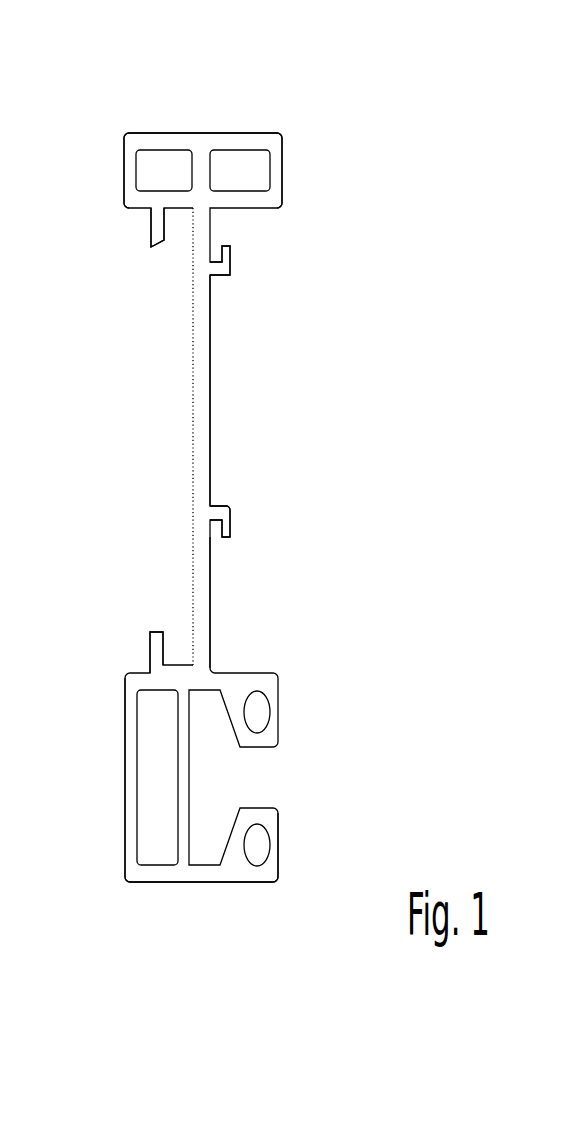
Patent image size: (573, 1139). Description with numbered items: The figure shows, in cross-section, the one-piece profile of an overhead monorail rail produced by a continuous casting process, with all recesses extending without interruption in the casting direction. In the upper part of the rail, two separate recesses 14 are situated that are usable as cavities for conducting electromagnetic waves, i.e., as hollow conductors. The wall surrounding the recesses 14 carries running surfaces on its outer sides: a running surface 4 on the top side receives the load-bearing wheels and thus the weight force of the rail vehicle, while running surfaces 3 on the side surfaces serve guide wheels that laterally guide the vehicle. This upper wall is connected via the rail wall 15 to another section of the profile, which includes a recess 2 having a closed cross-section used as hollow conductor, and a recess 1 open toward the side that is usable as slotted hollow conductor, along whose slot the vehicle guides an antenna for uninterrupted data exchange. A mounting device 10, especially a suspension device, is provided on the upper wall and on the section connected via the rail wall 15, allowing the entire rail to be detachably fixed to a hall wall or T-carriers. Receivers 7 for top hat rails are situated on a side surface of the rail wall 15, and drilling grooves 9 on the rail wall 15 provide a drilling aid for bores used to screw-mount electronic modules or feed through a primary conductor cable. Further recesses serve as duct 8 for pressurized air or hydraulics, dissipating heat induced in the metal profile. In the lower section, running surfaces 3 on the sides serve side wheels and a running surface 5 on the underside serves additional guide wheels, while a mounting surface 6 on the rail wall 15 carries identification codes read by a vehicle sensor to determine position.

The slotted hollow conductor 1 is at (217, 777).
The hollow conductor 2 is at (160, 775).
The running surfaces 3 is at (123, 163).
The running surface 4 is at (182, 132).
The running surface 5 is at (190, 885).
The mounting surface 6 is at (125, 743).
The receivers for top hat rails 7 is at (229, 258).
The duct 8 is at (256, 716).
The drilling grooves 9 is at (213, 305).
The mounting device 10 is at (157, 245).
The recesses 14 is at (162, 177).
The rail wall 15 is at (203, 407).